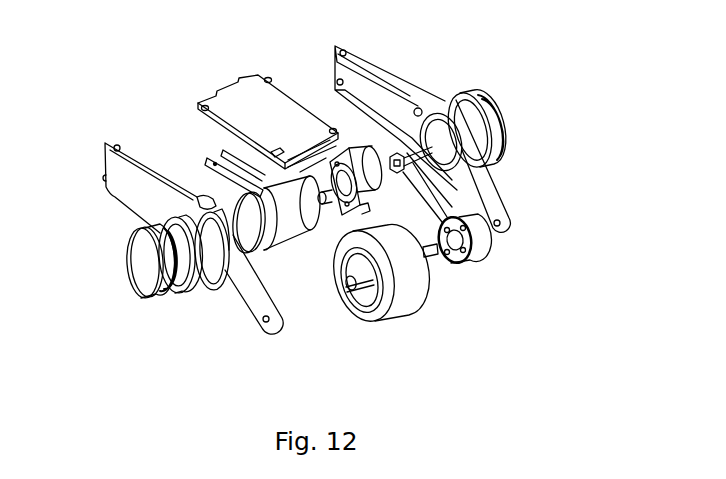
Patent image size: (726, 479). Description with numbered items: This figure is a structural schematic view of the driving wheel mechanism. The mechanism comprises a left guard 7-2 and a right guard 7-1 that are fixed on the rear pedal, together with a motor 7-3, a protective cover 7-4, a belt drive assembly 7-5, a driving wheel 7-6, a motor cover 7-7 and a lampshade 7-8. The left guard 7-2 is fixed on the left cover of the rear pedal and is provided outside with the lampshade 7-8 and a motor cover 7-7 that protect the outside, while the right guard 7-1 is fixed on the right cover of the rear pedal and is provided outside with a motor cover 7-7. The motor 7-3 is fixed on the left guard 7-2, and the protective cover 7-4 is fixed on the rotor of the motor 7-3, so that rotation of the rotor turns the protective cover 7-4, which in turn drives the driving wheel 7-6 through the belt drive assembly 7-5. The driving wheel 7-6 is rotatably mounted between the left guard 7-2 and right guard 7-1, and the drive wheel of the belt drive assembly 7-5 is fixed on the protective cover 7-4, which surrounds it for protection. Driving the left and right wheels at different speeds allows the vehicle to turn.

The right guard 7-1 is at (382, 94).
The left guard 7-2 is at (149, 197).
The motor 7-3 is at (282, 217).
The protective cover 7-4 is at (330, 110).
The belt drive assembly 7-5 is at (478, 233).
The driving wheel 7-6 is at (402, 275).
The motor cover 7-7 is at (147, 258).
The lampshade 7-8 is at (212, 273).